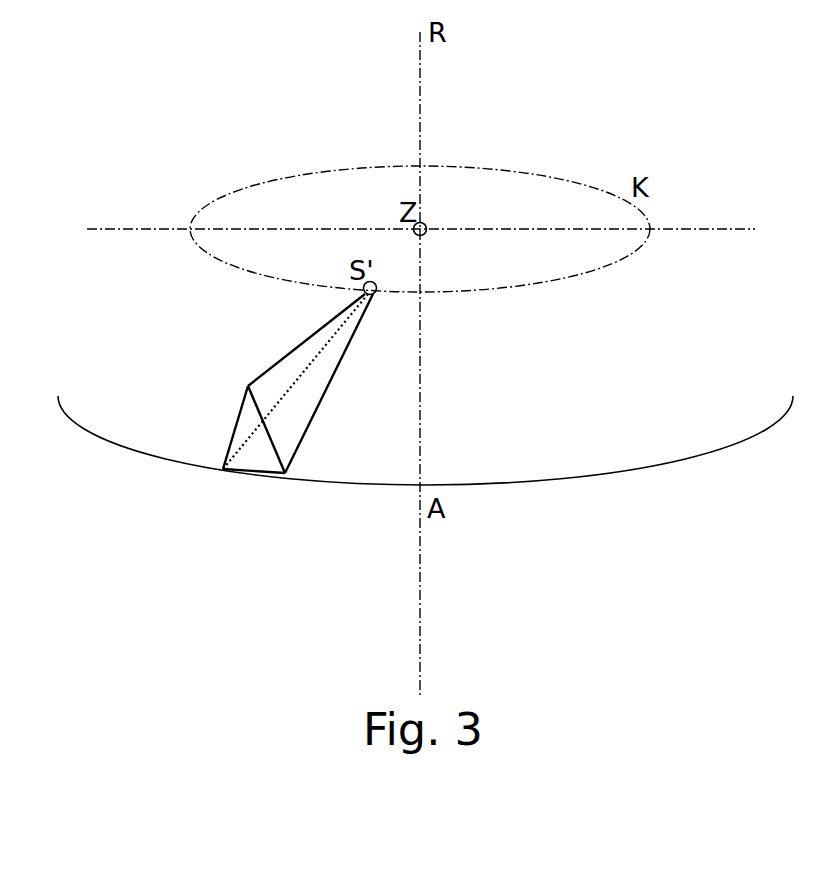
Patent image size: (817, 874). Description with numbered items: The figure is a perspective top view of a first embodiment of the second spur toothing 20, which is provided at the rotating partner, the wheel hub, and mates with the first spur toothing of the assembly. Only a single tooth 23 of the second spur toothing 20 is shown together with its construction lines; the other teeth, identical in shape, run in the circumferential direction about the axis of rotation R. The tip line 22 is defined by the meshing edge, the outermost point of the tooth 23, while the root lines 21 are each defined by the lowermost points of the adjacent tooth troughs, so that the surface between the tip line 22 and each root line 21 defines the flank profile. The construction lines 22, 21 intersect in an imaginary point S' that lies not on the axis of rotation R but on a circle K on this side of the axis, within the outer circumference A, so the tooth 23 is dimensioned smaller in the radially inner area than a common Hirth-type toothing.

The second spur toothing 20 is at (668, 104).
The root line 21 is at (287, 388).
The tip line 22 is at (300, 345).
The tooth 23 is at (252, 473).